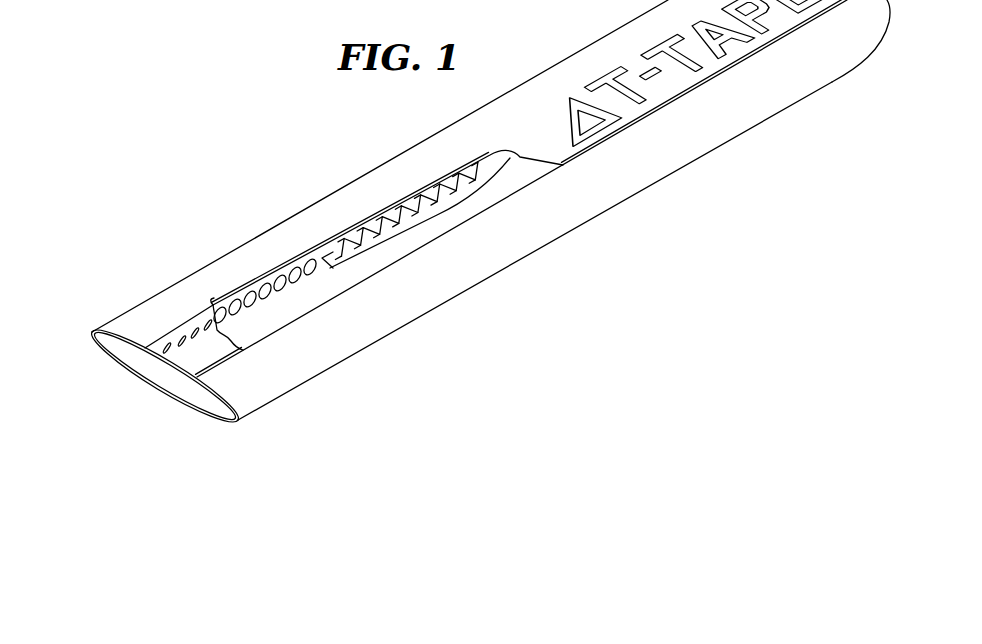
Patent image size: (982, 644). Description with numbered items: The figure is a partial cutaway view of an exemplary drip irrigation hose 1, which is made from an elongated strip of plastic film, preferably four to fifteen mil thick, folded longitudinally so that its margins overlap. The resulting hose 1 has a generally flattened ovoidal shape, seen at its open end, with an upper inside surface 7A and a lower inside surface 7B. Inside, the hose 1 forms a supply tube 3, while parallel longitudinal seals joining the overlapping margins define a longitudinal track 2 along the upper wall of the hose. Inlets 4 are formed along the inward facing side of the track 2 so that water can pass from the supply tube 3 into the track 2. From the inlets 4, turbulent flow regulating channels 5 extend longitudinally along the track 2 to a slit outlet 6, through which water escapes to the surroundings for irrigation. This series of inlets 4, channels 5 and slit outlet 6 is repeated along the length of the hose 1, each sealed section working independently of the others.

The drip irrigation hose 1 is at (279, 150).
The longitudinal track 2 is at (668, 104).
The supply tube 3 is at (170, 379).
The inlets 4 is at (308, 263).
The turbulent flow regulating channels 5 is at (440, 213).
The slit outlet 6 is at (520, 157).
The upper inside surface 7A is at (117, 348).
The lower inside surface 7B is at (213, 407).